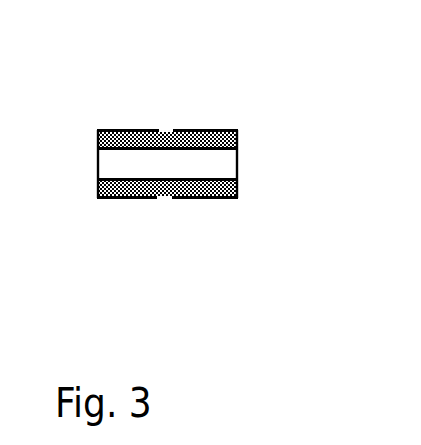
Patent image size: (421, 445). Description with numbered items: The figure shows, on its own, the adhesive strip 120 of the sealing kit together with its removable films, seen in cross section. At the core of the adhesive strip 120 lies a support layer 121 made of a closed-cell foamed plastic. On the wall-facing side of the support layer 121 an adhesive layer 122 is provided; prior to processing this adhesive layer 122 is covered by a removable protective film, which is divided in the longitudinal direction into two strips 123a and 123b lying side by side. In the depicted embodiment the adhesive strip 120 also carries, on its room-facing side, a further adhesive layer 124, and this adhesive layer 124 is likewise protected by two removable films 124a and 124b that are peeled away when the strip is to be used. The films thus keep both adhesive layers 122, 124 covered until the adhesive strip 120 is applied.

The adhesive strip 120 is at (297, 118).
The support layer 121 is at (162, 158).
The adhesive layer 122 is at (196, 181).
The protective film strip 123a is at (110, 200).
The protective film strip 123b is at (227, 200).
The adhesive layer 124 is at (170, 141).
The removable film 124a is at (102, 130).
The removable film 124b is at (192, 130).